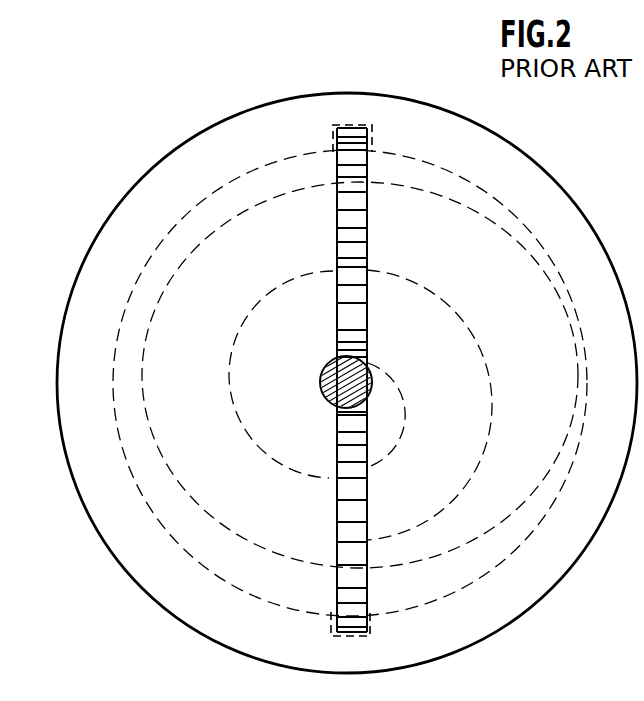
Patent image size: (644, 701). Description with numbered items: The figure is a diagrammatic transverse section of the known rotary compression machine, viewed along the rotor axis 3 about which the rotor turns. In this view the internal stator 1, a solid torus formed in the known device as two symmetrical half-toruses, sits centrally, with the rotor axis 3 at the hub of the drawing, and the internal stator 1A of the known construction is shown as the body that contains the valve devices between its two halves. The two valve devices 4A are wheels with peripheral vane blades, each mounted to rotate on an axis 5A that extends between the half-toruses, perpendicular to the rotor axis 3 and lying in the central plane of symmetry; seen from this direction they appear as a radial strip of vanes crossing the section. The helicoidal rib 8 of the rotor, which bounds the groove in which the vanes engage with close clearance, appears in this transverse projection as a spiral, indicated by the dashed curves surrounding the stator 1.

The internal stator 1 is at (155, 586).
The internal stator 1A is at (535, 327).
The axis 3 is at (322, 377).
The valve devices 4A is at (368, 222).
The axis 5A is at (400, 241).
The rib 8 is at (488, 432).